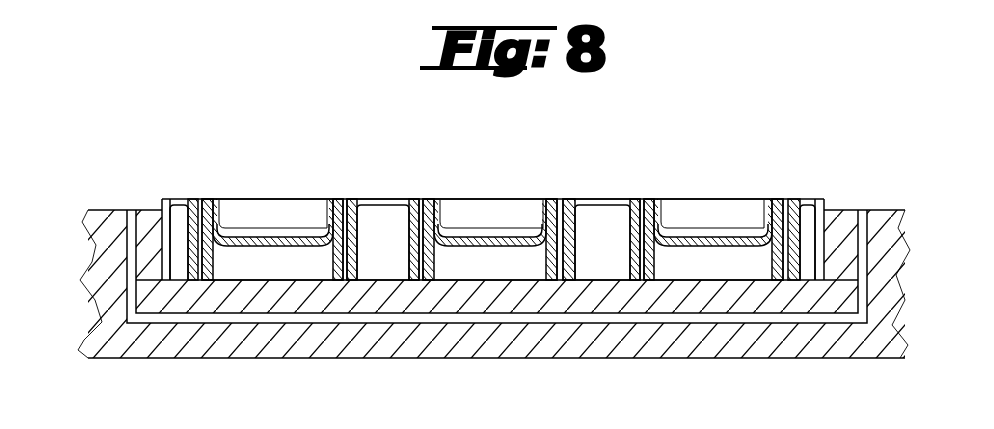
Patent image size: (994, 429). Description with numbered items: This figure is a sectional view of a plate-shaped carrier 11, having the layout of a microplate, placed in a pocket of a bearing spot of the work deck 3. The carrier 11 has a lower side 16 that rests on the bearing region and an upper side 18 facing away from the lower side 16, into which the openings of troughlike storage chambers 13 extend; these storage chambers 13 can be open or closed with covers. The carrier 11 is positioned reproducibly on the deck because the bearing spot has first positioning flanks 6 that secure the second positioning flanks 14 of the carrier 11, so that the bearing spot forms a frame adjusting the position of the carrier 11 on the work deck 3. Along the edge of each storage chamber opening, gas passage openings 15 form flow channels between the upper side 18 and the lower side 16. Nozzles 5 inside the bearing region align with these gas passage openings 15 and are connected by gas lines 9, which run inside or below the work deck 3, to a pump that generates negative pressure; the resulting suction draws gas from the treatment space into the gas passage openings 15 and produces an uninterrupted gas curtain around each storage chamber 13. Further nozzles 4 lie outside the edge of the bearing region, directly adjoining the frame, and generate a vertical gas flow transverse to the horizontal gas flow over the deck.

The work deck 3 is at (107, 210).
The nozzles 4 is at (132, 240).
The nozzles 5 is at (197, 295).
The first positioning flanks 6 is at (162, 244).
The gas lines 9 is at (397, 317).
The carrier 11 is at (618, 173).
The storage chambers 13 is at (266, 214).
The second positioning flanks 14 is at (166, 247).
The gas passage openings 15 is at (420, 210).
The lower side 16 is at (463, 280).
The upper side 18 is at (628, 200).